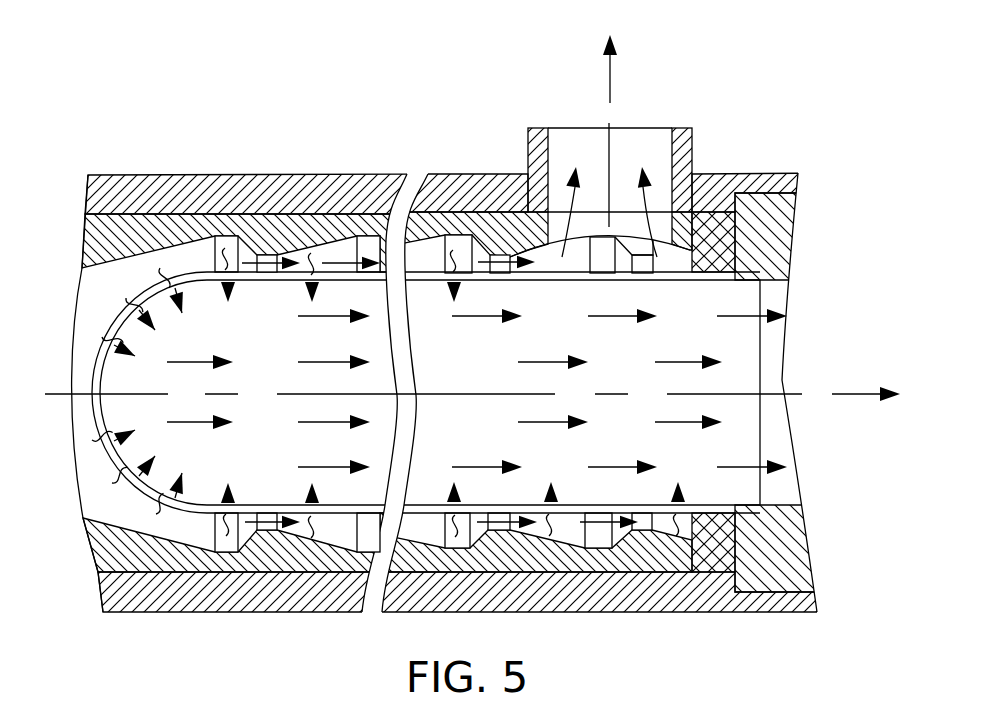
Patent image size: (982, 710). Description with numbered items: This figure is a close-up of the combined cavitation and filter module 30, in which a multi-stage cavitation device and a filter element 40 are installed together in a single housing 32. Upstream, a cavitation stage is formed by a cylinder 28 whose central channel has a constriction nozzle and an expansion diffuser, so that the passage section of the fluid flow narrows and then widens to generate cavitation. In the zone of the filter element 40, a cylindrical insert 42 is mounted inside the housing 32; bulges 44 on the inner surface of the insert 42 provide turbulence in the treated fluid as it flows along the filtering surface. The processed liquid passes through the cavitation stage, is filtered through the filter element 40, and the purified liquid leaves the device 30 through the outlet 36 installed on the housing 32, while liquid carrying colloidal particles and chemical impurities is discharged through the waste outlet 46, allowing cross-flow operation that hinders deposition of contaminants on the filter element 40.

The combined cavitation and filter module 30 is at (472, 320).
The cylinder 28 is at (142, 227).
The housing 32 is at (242, 198).
The bulges 44 is at (270, 253).
The cylindrical insert 42 is at (450, 217).
The waste outlet 46 is at (538, 128).
The filter element 40 is at (703, 277).
The outlet 36 is at (793, 210).